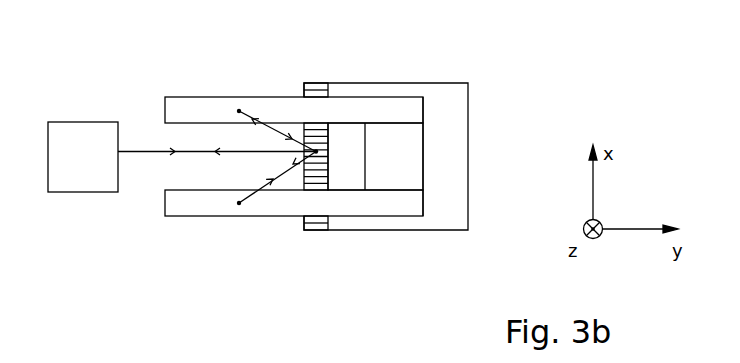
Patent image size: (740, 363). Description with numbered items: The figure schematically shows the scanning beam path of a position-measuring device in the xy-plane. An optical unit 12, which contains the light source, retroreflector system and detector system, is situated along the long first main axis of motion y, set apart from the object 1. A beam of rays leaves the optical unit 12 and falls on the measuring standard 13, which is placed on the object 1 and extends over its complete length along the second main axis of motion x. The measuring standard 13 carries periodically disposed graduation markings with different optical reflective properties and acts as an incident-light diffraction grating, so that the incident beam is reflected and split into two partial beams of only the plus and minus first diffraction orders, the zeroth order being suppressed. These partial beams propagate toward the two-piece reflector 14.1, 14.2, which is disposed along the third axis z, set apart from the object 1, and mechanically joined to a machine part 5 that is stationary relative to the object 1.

The object 1 is at (447, 223).
The machine part 5 is at (413, 153).
The optical unit 12 is at (71, 186).
The measuring standard 13 is at (304, 131).
The reflector 14.1 is at (182, 210).
The reflector 14.2 is at (182, 103).